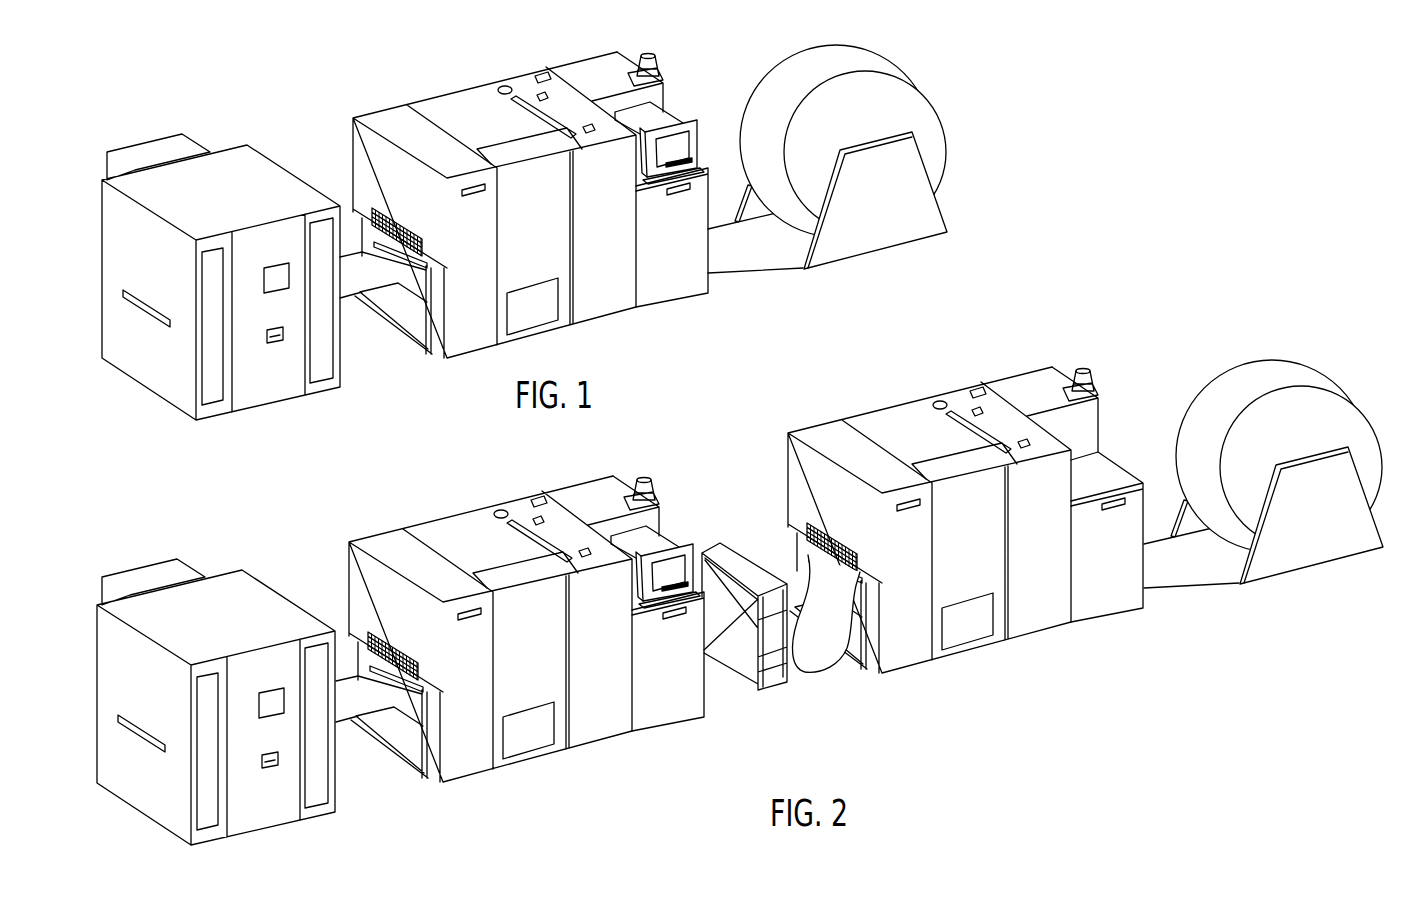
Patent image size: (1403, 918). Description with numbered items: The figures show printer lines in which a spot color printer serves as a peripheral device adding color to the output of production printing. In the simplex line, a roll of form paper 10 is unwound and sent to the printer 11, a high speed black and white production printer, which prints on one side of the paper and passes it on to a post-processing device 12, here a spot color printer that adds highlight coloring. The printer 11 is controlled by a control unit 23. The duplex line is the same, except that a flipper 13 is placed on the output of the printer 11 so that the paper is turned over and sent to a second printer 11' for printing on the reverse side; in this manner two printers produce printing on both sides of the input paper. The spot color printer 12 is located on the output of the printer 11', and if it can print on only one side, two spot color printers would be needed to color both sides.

In FIG. 1, the roll of form paper 10 is at (885, 237).
In FIG. 2, the roll of form paper 10 is at (1315, 555).
In FIG. 1, the printer 11 is at (501, 205).
In FIG. 2, the printer 11 is at (965, 521).
In FIG. 2, the printer 11' is at (497, 632).
In FIG. 1, the post-processing device 12 is at (263, 387).
In FIG. 2, the post-processing device 12 is at (272, 812).
In FIG. 2, the flipper 13 is at (772, 678).
In FIG. 1, the control unit 23 is at (673, 292).
In FIG. 2, the control unit 23 is at (672, 715).